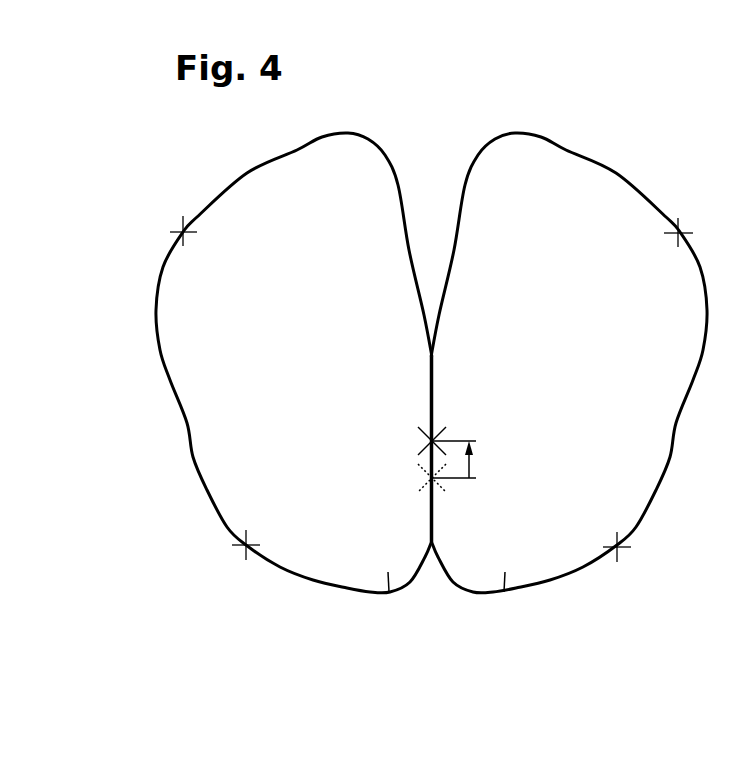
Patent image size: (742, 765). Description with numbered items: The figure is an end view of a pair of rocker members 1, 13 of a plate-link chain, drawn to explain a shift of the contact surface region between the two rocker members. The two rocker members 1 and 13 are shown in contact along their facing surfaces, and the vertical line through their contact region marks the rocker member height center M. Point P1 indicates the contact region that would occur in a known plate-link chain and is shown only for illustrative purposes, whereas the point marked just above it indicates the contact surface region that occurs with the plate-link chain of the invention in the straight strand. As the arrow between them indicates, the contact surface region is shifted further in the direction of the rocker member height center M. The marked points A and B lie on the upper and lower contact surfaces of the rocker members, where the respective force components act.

The rocker member 1 is at (390, 593).
The rocker member 13 is at (505, 593).
The rocker member height center M is at (432, 365).
The point A is at (428, 226).
The point B is at (431, 555).
The point P1 is at (430, 460).